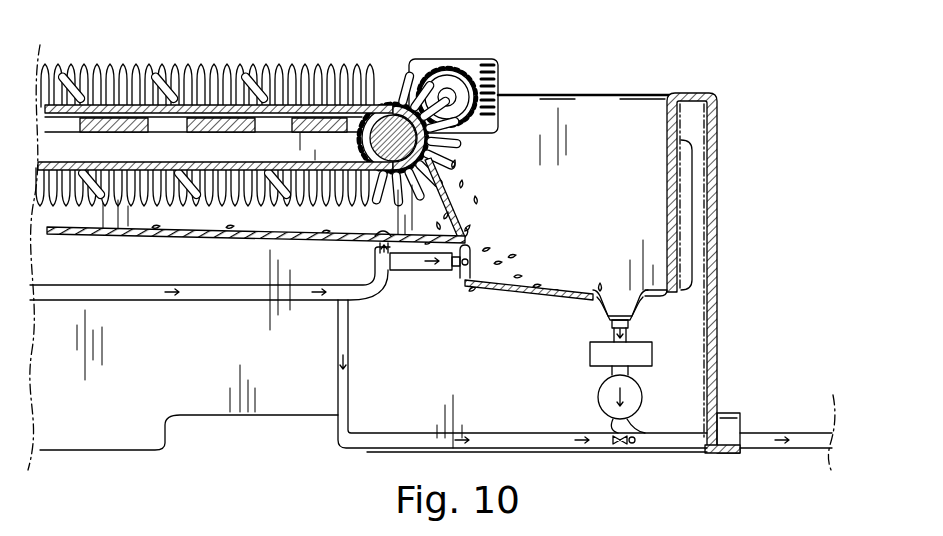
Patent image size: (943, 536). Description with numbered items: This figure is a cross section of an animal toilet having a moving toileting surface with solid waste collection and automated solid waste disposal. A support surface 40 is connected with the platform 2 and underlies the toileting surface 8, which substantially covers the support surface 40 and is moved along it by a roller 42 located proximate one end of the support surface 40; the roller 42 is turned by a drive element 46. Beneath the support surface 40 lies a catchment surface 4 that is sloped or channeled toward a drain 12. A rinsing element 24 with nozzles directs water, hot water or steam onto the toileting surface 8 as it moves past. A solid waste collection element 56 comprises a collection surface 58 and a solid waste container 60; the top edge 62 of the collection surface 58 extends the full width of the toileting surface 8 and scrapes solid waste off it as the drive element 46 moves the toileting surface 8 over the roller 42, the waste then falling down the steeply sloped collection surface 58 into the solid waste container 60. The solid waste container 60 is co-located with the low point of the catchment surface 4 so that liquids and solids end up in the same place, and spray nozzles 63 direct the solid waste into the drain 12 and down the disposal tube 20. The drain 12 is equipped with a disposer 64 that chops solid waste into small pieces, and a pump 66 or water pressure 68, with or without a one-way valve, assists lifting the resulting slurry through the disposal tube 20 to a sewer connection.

The platform 2 is at (718, 147).
The catchment surface 4 is at (172, 398).
The toileting surface 8 is at (247, 78).
The drain 12 is at (593, 305).
The disposal tube 20 is at (803, 435).
The rinsing element 24 is at (363, 300).
The support surface 40 is at (126, 133).
The roller 42 is at (376, 108).
The drive element 46 is at (498, 61).
The solid waste collection element 56 is at (695, 217).
The collection surface 58 is at (458, 212).
The solid waste container 60 is at (586, 250).
The top edge of the collection surface 62 is at (448, 152).
The spray nozzles 63 is at (466, 282).
The disposer 64 is at (590, 353).
The pump 66 is at (605, 402).
The water pressure 68 is at (630, 450).